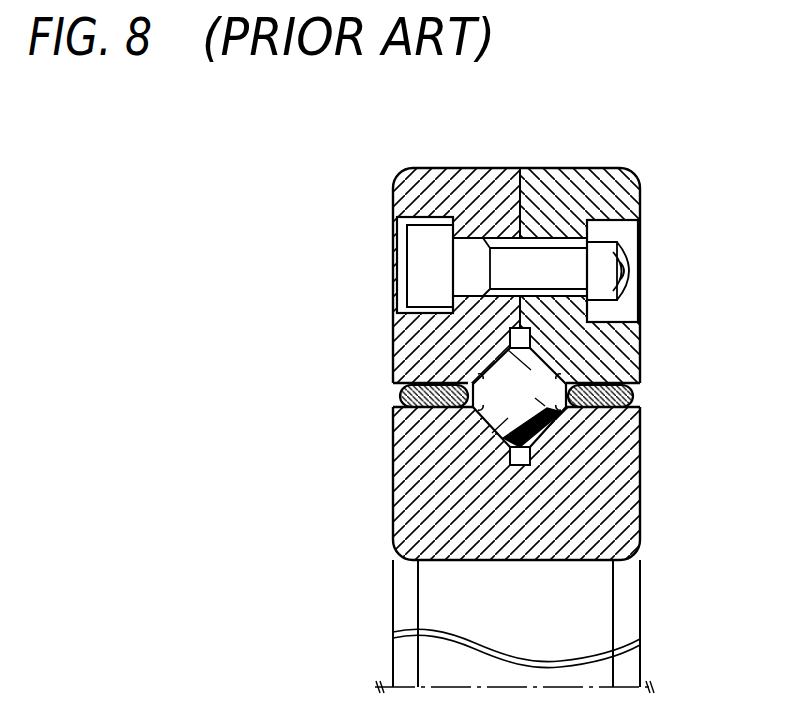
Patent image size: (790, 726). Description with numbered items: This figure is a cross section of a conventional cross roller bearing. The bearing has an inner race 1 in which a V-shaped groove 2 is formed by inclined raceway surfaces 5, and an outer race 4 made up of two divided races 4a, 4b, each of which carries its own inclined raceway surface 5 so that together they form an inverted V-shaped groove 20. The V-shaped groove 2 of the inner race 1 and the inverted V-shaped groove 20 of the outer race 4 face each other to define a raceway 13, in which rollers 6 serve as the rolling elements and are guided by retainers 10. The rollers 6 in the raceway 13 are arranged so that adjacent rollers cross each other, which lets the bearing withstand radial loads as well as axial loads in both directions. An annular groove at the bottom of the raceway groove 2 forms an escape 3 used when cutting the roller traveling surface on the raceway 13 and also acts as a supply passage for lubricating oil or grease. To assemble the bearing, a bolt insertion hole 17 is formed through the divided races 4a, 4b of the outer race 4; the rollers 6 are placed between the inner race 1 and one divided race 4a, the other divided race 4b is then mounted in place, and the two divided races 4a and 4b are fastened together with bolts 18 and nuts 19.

The inner race 1 is at (517, 530).
The V-shaped groove 2 is at (478, 432).
The escape 3 is at (514, 466).
The outer race 4 is at (608, 119).
The divided race 4a is at (588, 177).
The divided race 4b is at (452, 177).
The inclined raceway surface 5 is at (486, 376).
The roller 6 is at (550, 423).
The retainer 10 is at (402, 400).
The raceway 13 is at (524, 398).
The bolt insertion hole 17 is at (540, 296).
The bolt 18 is at (500, 274).
The nut 19 is at (610, 233).
The inverted V-shaped groove 20 is at (512, 352).